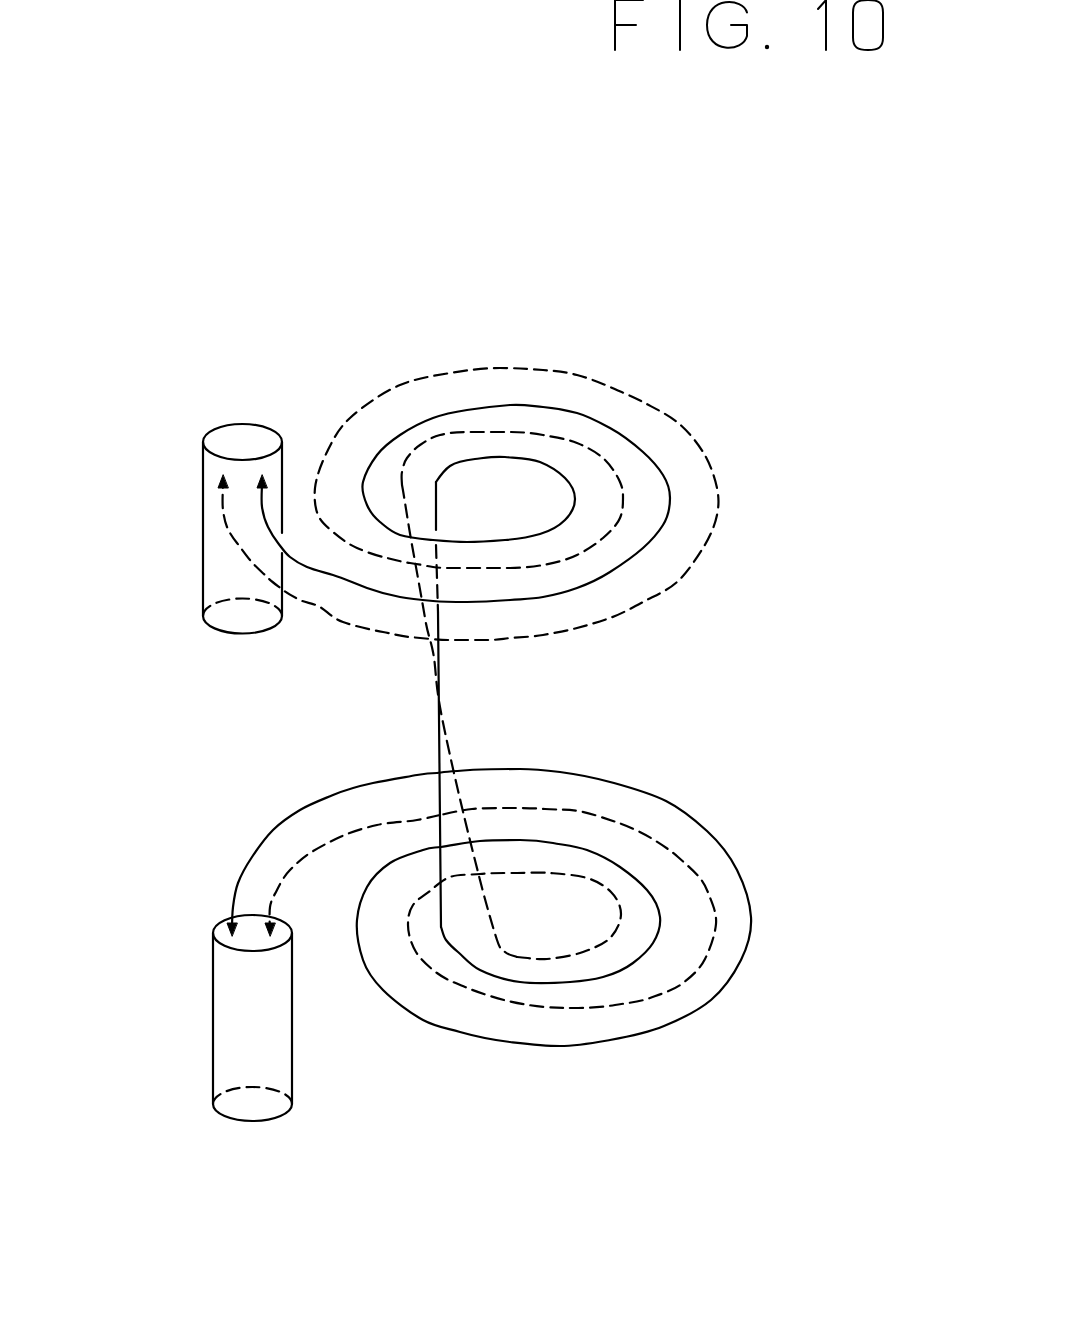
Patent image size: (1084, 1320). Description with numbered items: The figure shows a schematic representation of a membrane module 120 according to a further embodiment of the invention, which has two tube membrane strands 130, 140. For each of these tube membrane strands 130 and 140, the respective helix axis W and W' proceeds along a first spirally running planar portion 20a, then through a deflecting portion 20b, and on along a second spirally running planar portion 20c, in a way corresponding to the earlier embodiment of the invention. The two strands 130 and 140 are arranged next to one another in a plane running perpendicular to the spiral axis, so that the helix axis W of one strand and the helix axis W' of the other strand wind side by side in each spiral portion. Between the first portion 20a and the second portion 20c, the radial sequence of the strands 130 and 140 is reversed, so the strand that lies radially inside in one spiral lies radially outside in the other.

The membrane module 120 is at (130, 109).
The first spirally running planar portion 20a is at (801, 1190).
The deflecting portion 20b is at (758, 725).
The second spirally running planar portion 20c is at (791, 266).
The tube membrane strand 130 is at (67, 740).
The tube membrane strand 140 is at (185, 687).
The helix axis W is at (416, 907).
The helix axis W' is at (523, 844).